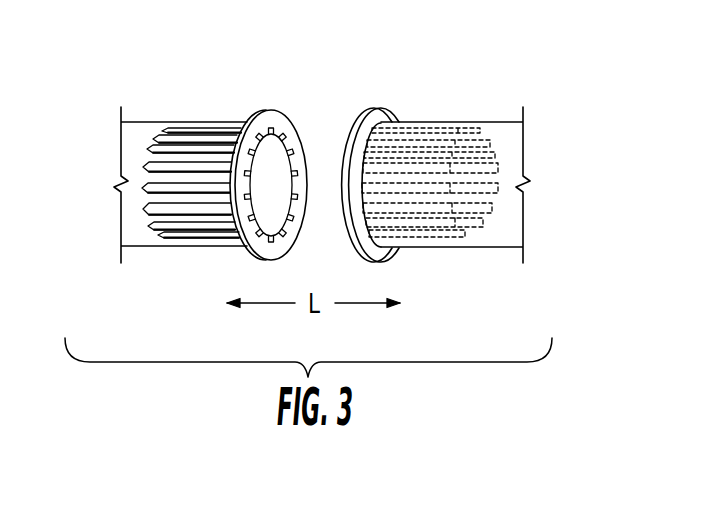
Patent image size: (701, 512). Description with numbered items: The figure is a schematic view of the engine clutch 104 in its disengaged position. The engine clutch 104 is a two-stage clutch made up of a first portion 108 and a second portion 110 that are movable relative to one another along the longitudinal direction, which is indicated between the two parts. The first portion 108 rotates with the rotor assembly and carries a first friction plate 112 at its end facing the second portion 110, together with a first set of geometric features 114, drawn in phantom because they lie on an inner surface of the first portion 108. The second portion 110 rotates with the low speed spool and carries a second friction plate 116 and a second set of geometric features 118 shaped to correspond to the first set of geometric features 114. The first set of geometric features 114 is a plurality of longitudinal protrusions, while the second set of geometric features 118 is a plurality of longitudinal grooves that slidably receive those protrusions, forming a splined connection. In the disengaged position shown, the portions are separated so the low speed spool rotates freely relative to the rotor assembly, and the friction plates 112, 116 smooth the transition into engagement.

The engine clutch 104 is at (433, 67).
The first portion 108 is at (448, 113).
The second portion 110 is at (193, 73).
The first friction plate 112 is at (370, 112).
The first set of geometric features 114 is at (422, 253).
The second friction plate 116 is at (255, 110).
The second set of geometric features 118 is at (195, 257).